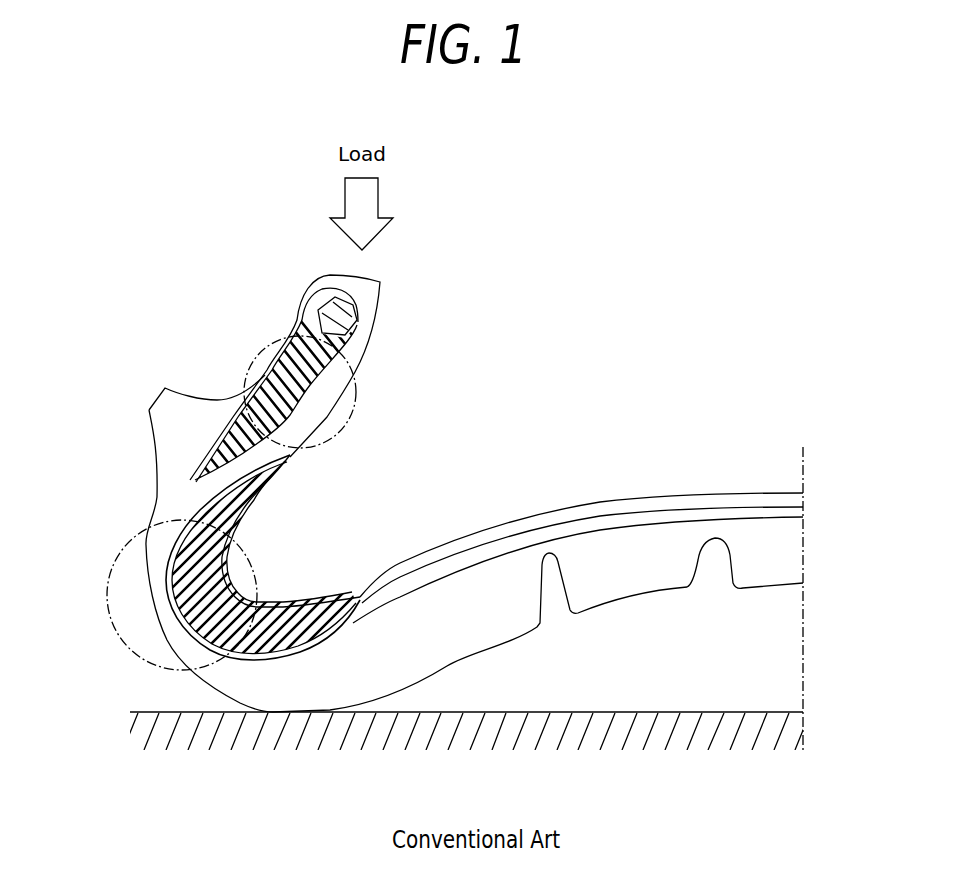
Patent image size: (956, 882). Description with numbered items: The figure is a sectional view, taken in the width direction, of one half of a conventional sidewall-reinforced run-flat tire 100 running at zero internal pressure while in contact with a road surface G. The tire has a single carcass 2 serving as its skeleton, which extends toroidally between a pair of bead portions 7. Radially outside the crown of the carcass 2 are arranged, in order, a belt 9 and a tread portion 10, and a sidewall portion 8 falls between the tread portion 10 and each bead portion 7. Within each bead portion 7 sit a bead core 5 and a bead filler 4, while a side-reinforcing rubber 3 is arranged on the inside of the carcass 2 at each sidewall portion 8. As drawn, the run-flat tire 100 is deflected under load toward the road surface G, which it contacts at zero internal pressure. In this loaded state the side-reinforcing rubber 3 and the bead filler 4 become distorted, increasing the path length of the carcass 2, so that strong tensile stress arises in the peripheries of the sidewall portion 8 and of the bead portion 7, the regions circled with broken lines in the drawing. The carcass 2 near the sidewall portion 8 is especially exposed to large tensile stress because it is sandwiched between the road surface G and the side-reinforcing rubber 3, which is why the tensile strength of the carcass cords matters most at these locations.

The carcass 2 is at (183, 502).
The side-reinforcing rubber 3 is at (252, 581).
The bead filler 4 is at (270, 395).
The bead core 5 is at (330, 307).
The bead portion 7 is at (318, 395).
The sidewall portion 8 is at (162, 615).
The belt 9 is at (467, 563).
The tread portion 10 is at (630, 580).
The run-flat tire 100 is at (542, 432).
The road surface G is at (702, 711).